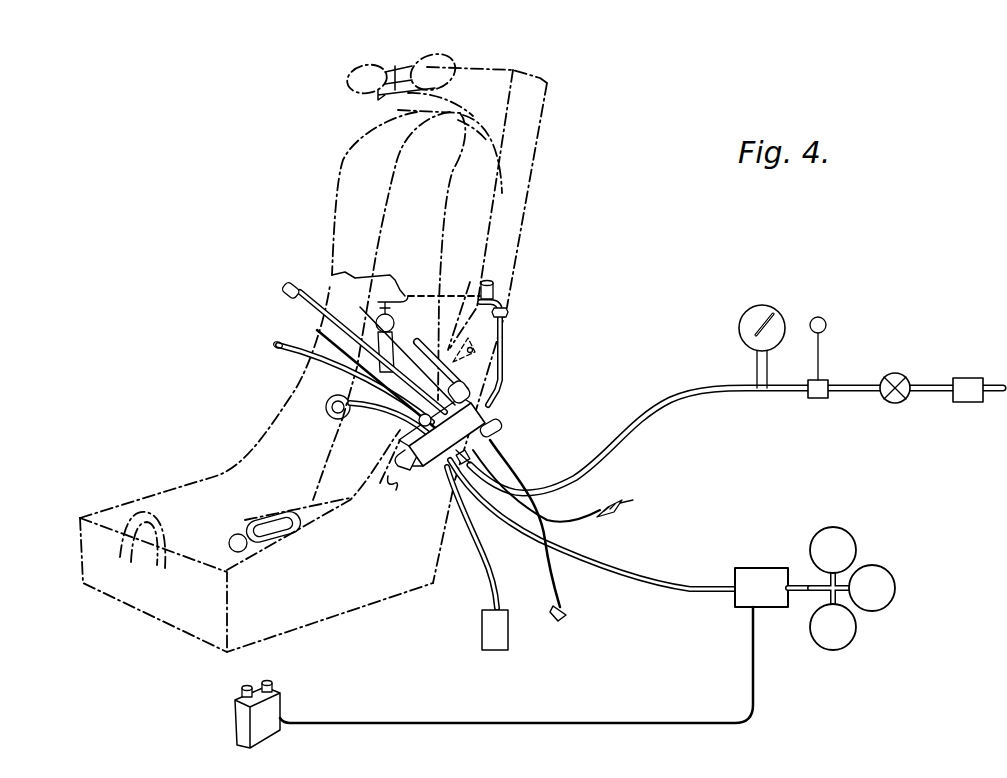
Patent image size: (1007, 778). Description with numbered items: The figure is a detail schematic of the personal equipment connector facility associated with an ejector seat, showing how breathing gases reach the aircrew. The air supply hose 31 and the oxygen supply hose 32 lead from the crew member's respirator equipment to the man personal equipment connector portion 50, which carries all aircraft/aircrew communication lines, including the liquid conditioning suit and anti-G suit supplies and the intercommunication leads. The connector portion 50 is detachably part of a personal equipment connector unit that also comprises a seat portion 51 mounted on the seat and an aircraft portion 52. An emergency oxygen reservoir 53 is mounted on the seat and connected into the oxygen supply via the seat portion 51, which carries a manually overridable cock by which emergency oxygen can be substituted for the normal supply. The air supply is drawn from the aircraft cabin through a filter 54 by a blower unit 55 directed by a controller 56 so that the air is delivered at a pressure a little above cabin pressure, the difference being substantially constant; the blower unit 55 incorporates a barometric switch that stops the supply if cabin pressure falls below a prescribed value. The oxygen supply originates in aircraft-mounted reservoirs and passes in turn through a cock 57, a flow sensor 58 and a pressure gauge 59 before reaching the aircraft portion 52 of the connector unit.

The air supply hose 31 is at (268, 345).
The oxygen supply hose 32 is at (276, 287).
The man personal equipment connector portion 50 is at (490, 400).
The seat portion 51 is at (467, 420).
The aircraft portion 52 is at (500, 434).
The emergency oxygen reservoir 53 is at (360, 307).
The filter 54 is at (880, 580).
The blower unit 55 is at (767, 570).
The controller 56 is at (272, 712).
The cock 57 is at (894, 404).
The flow sensor 58 is at (831, 377).
The pressure gauge 59 is at (781, 315).